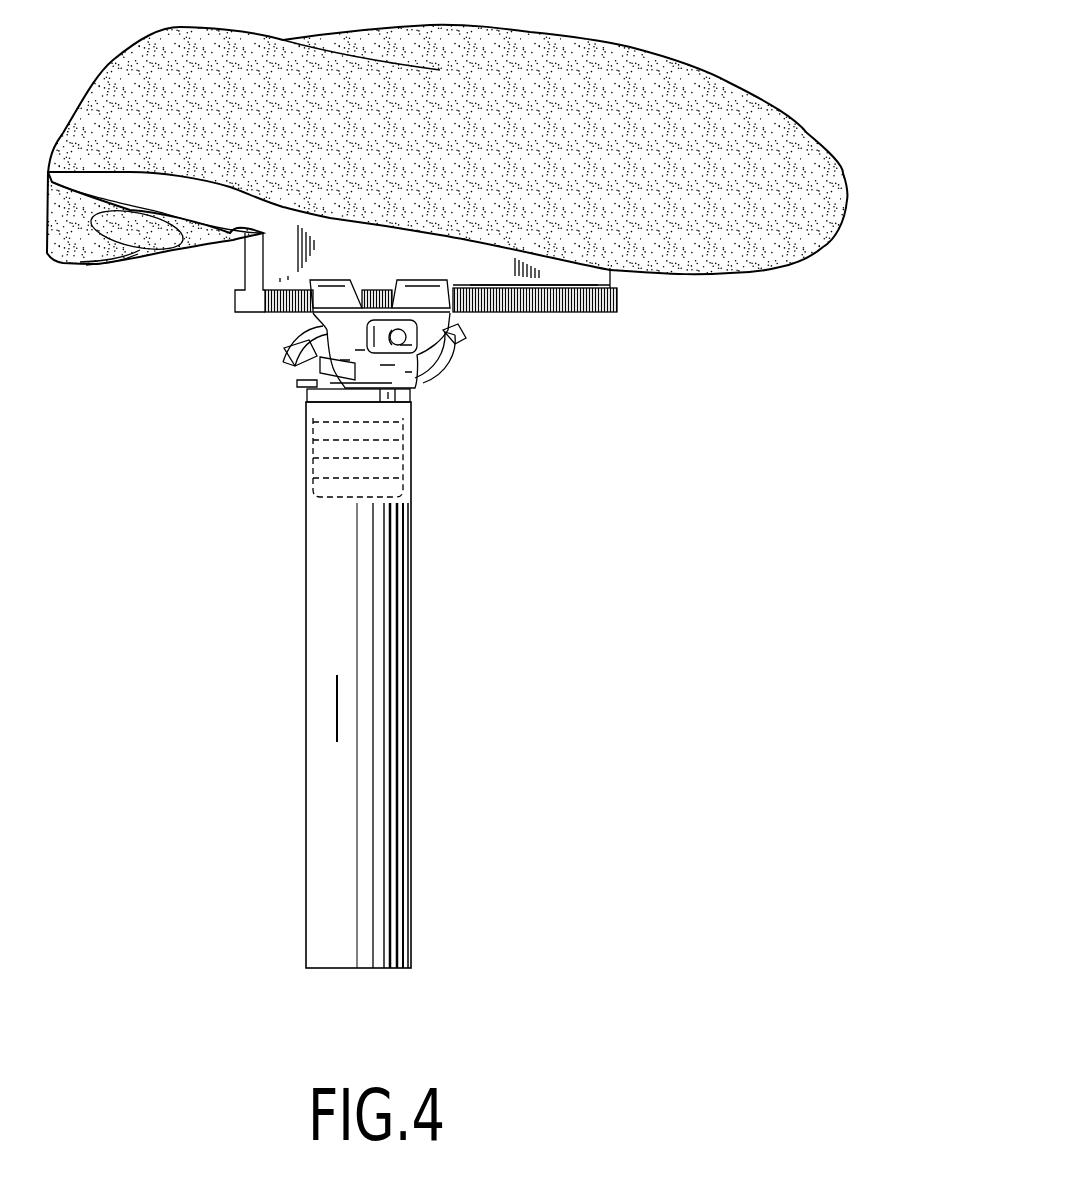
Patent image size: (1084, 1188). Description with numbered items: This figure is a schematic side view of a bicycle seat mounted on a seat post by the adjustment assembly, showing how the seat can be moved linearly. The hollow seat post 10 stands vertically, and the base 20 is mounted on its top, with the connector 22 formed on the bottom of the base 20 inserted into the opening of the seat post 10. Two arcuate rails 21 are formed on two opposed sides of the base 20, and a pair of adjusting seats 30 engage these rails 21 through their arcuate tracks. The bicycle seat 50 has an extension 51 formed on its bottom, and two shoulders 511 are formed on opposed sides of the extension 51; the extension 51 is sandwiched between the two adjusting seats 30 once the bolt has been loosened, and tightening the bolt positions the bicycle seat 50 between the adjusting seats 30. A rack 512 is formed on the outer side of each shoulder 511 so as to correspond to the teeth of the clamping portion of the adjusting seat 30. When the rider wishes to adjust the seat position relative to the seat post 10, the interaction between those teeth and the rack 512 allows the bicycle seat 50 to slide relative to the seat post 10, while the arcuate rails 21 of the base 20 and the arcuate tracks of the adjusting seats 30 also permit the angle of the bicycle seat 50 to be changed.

The bicycle seat 50 is at (753, 71).
The extension 51 is at (245, 260).
The shoulder 511 is at (238, 302).
The rack 512 is at (540, 303).
The base 20 is at (373, 362).
The arcuate rail 21 is at (457, 343).
The adjusting seat 30 is at (414, 381).
The connector 22 is at (400, 470).
The seat post 10 is at (398, 598).